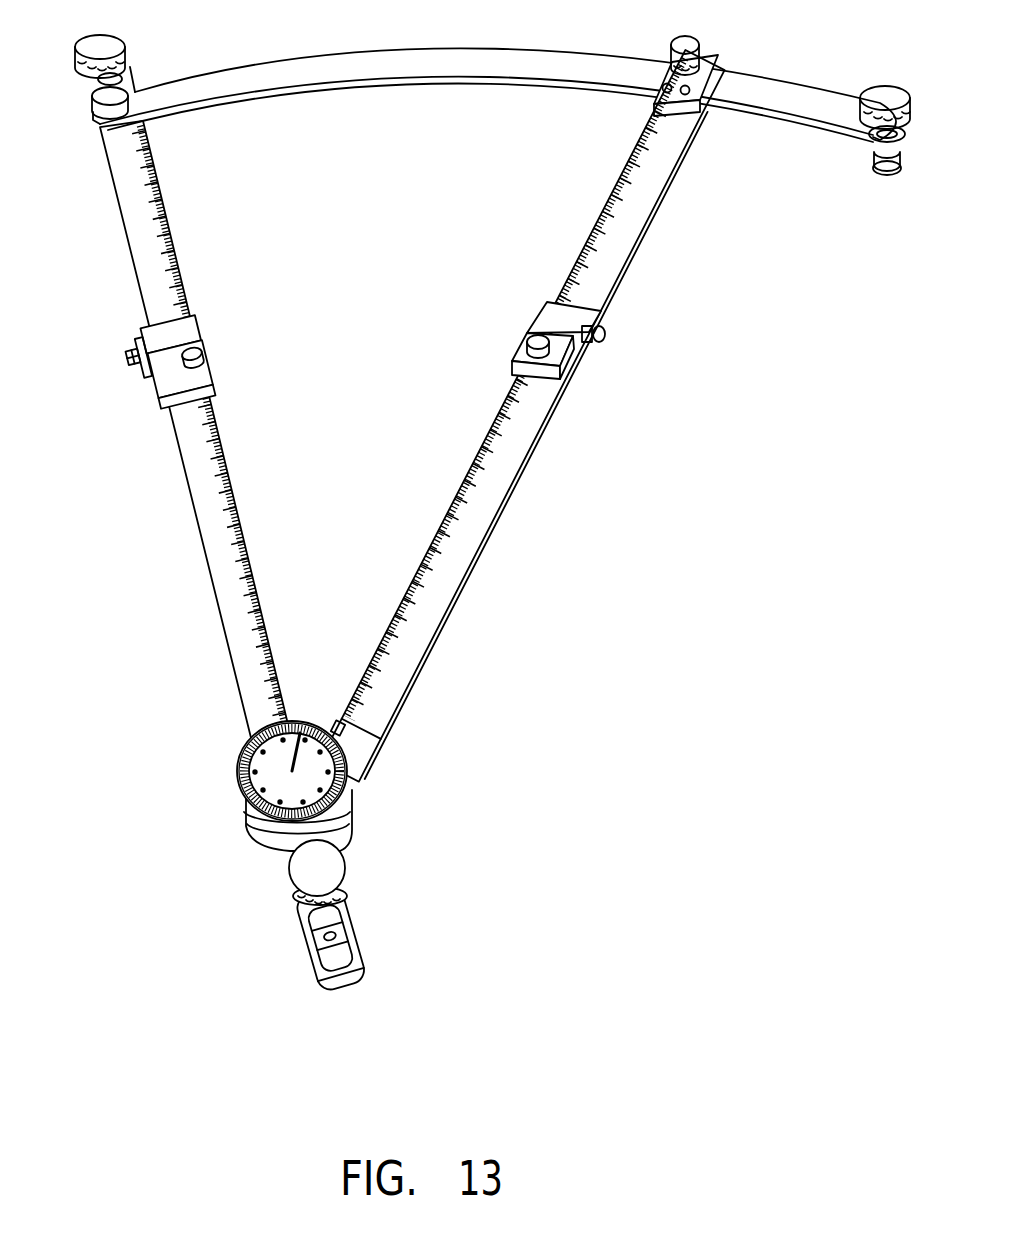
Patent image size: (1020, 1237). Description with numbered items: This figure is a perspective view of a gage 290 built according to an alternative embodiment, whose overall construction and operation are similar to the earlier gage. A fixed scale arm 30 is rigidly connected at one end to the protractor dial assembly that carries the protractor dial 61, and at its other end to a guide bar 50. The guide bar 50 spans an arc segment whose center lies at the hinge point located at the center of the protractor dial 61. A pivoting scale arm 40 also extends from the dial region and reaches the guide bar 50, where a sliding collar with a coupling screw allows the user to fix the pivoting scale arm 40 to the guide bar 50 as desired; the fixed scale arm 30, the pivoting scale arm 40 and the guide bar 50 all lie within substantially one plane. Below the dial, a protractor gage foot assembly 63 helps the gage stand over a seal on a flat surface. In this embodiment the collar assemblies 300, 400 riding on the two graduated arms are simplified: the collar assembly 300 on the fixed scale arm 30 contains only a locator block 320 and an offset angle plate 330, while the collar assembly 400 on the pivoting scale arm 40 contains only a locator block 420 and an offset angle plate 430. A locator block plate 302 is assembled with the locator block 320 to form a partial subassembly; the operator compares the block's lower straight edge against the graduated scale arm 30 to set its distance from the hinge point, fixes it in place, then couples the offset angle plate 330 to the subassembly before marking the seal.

The guide bar 50 is at (386, 66).
The fixed scale arm 30 is at (242, 490).
The pivoting scale arm 40 is at (445, 519).
The gage 290 is at (524, 416).
The collar assembly 300 is at (171, 358).
The locator block plate 302 is at (142, 325).
The locator block 320 is at (201, 325).
The offset angle plate 330 is at (210, 357).
The collar assembly 400 is at (532, 364).
The locator block 420 is at (541, 313).
The offset angle plate 430 is at (514, 347).
The protractor dial 61 is at (300, 733).
The protractor gage foot assembly 63 is at (339, 868).